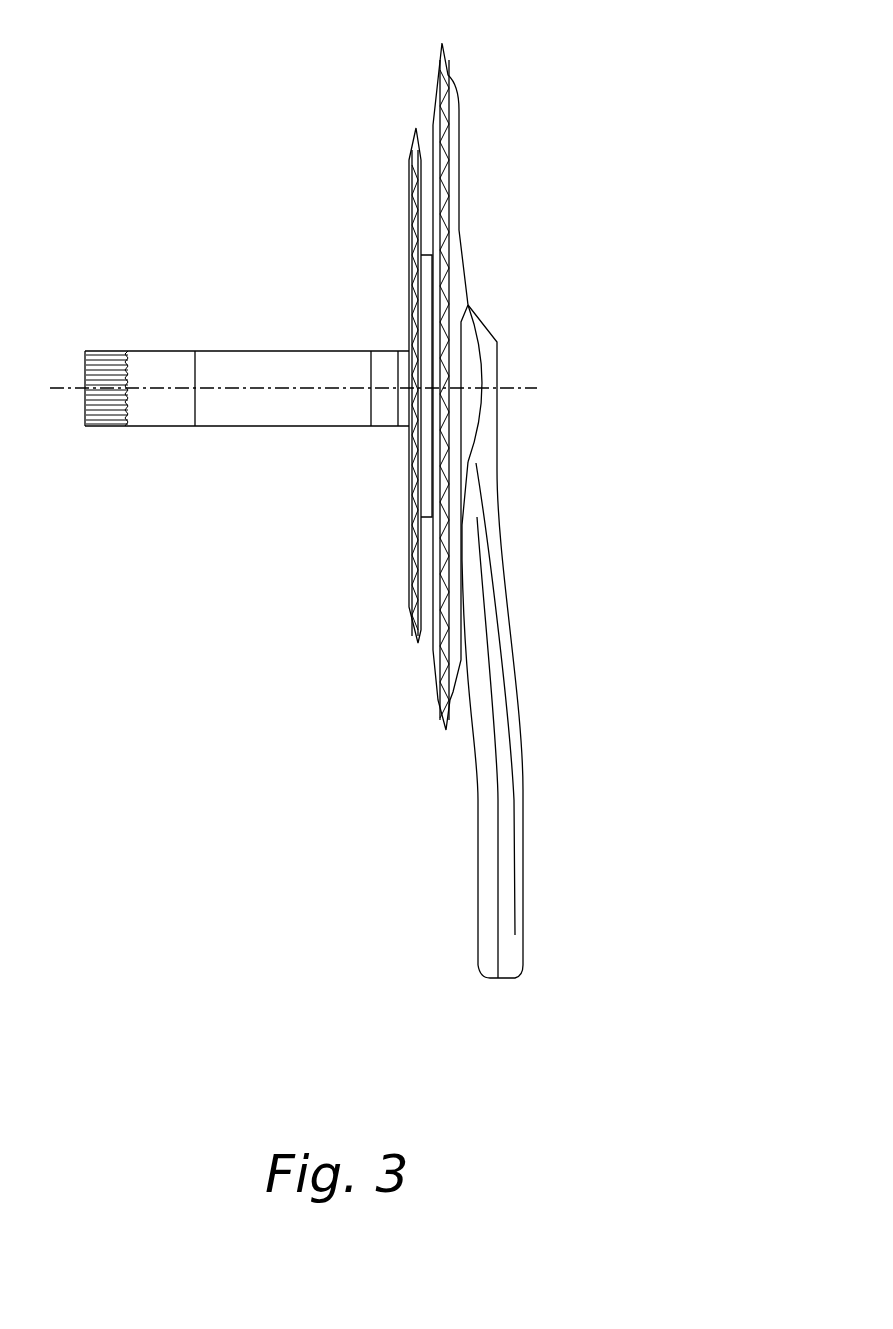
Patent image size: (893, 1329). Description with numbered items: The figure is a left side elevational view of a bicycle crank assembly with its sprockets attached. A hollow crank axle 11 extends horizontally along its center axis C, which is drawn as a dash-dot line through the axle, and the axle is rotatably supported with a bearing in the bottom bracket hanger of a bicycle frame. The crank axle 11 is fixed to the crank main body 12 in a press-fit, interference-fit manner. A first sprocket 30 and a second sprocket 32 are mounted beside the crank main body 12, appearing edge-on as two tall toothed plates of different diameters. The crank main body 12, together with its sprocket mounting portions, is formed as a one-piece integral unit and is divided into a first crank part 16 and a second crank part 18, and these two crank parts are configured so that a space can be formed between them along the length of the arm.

The crank axle 11 is at (262, 351).
The crank main body 12 is at (506, 641).
The first crank part 16 is at (478, 858).
The second crank part 18 is at (523, 780).
The first sprocket 30 is at (445, 113).
The second sprocket 32 is at (410, 163).
The center axis C is at (523, 385).